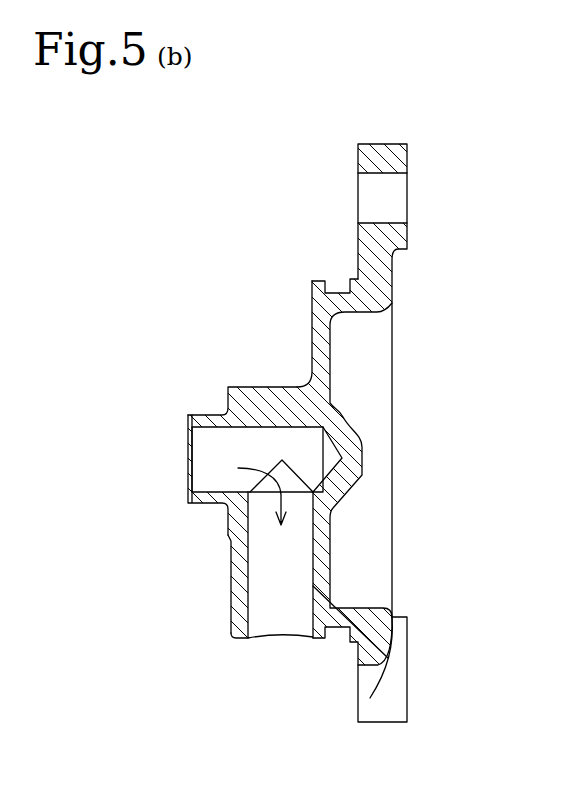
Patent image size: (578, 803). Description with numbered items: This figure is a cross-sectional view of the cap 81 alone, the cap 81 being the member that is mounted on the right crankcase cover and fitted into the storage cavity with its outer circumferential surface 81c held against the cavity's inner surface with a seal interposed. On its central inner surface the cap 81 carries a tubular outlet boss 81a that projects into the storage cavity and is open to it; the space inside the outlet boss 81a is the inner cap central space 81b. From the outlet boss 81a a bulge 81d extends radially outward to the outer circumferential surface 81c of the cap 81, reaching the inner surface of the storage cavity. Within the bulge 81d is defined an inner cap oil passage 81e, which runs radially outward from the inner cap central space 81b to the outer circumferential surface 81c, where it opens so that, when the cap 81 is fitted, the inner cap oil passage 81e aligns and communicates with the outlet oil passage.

The cap 81 is at (476, 253).
The outlet boss 81a is at (252, 387).
The inner cap central space 81b is at (240, 456).
The outer circumferential surface 81c is at (243, 642).
The bulge 81d is at (232, 578).
The inner cap oil passage 81e is at (312, 614).